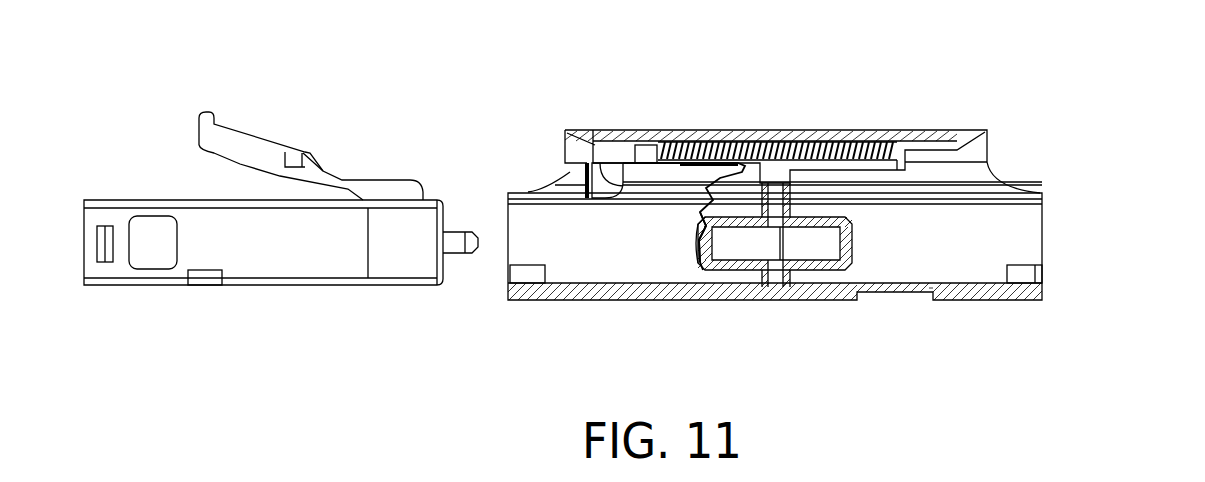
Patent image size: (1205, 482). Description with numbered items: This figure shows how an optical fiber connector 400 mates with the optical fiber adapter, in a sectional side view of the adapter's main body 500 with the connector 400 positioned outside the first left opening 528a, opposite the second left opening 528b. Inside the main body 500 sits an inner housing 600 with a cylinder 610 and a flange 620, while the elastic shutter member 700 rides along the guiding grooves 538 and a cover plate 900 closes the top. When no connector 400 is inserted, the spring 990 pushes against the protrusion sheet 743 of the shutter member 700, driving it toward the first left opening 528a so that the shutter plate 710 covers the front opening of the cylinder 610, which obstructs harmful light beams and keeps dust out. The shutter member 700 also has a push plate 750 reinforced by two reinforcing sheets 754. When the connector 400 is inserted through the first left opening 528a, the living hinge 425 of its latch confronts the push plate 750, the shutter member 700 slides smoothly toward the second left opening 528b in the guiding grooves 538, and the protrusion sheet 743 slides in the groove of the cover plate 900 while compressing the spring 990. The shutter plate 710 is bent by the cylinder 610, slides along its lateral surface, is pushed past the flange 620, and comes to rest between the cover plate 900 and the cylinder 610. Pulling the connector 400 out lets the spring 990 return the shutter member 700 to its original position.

The optical fiber connector 400 is at (281, 164).
The living hinge 425 is at (423, 192).
The first left opening 528a is at (496, 256).
The second left opening 528b is at (1052, 238).
The main body 500 is at (905, 307).
The cover plate 900 is at (759, 112).
The spring 990 is at (768, 140).
The protrusion sheet 743 is at (643, 160).
The reinforcing sheets 754 is at (602, 177).
The guiding groove 538 is at (568, 162).
The push plate 750 is at (578, 165).
The elastic shutter member 700 is at (648, 173).
The shutter plate 710 is at (694, 251).
The inner housing 600 is at (744, 278).
The cylinder 610 is at (730, 268).
The flange 620 is at (770, 278).